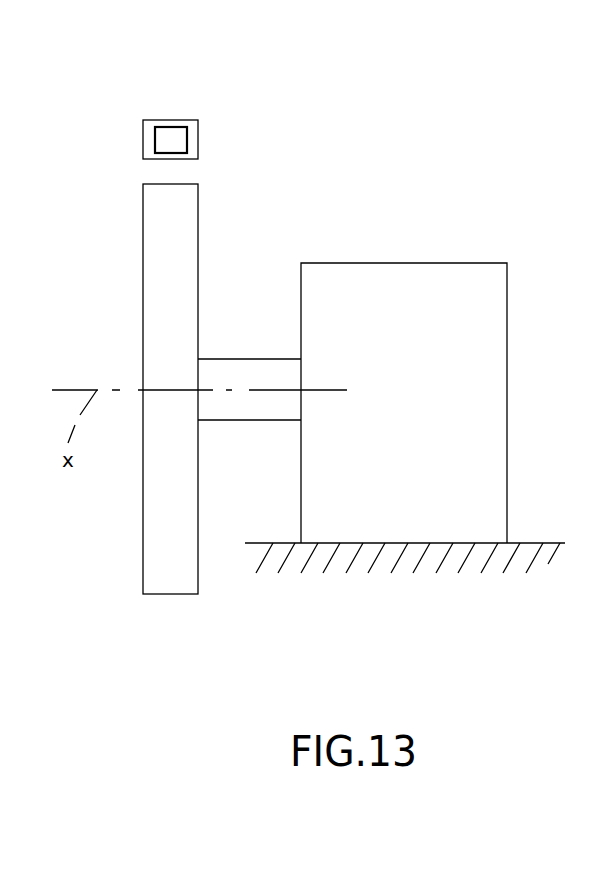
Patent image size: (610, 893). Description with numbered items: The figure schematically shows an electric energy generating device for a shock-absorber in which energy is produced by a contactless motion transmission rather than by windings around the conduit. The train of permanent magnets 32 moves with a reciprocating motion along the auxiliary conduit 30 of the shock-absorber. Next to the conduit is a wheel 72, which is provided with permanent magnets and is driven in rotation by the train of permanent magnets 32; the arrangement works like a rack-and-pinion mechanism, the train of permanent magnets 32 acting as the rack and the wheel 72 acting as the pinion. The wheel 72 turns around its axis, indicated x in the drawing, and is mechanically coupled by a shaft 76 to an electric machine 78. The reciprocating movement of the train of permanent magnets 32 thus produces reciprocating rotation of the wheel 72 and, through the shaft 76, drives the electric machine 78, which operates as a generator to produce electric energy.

The auxiliary conduit 30 is at (143, 137).
The train of permanent magnets 32 is at (198, 132).
The wheel 72 is at (143, 252).
The shaft 76 is at (258, 420).
The electric machine 78 is at (448, 263).